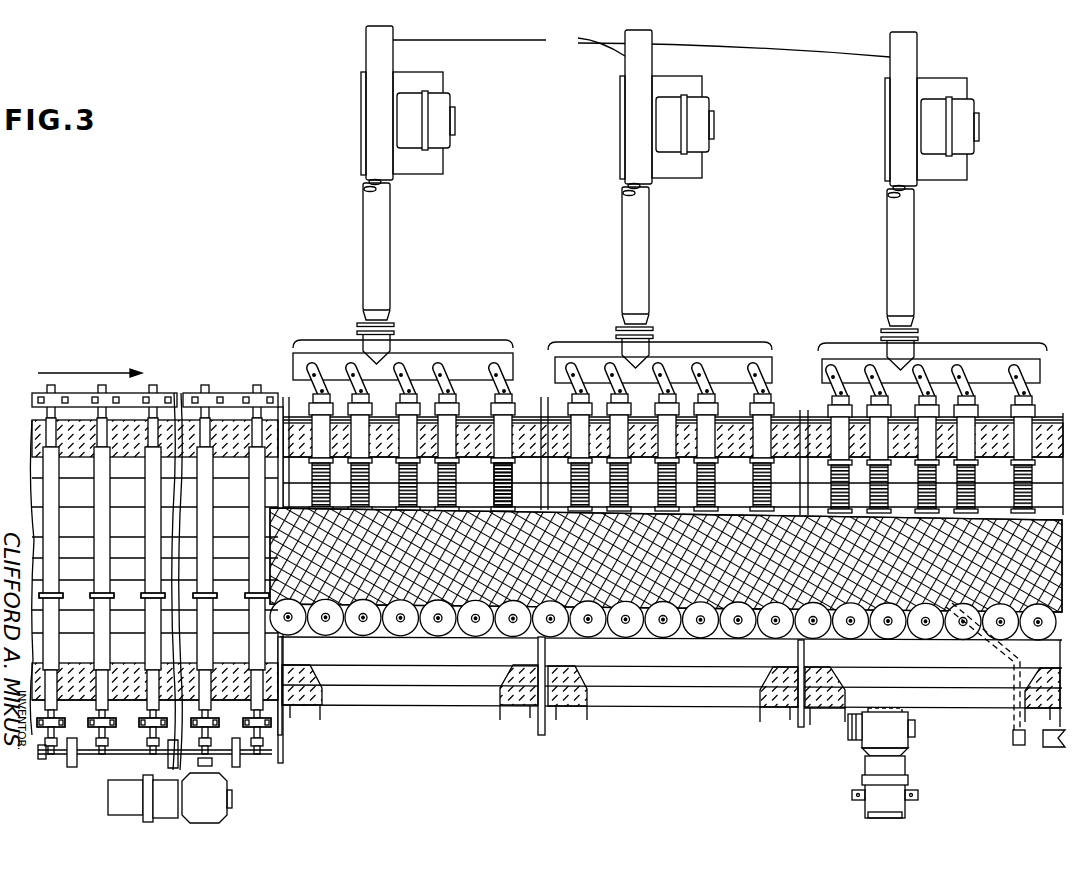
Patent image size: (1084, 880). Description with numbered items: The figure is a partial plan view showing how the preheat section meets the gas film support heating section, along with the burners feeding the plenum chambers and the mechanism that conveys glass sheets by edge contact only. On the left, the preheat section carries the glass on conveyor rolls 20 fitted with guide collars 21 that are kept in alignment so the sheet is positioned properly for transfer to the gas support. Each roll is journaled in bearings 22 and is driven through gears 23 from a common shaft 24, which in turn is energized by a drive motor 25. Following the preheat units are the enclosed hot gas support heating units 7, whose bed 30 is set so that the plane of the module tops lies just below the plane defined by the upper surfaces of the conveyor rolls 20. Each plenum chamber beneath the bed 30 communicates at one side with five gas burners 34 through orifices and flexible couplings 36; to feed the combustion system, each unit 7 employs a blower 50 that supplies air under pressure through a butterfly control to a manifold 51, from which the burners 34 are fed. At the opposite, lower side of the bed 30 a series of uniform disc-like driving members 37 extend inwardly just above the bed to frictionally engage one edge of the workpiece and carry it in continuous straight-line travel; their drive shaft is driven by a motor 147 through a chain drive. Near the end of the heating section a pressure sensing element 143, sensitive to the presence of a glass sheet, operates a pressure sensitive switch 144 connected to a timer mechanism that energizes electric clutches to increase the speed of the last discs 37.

The hot gas support heating unit 7 is at (394, 340).
The conveyor rolls 20 is at (198, 523).
The guide collars 21 is at (234, 596).
The bearings 22 is at (187, 394).
The gears 23 is at (252, 748).
The common shaft 24 is at (273, 757).
The drive motor 25 is at (170, 798).
The bed 30 is at (509, 532).
The gas burners 34 is at (446, 404).
The flexible couplings 36 is at (494, 490).
The disc-like driving members 37 is at (733, 640).
The blower 50 is at (641, 42).
The manifold 51 is at (534, 348).
The pressure sensing element 143 is at (948, 606).
The pressure sensitive switch 144 is at (1013, 738).
The motor 147 is at (862, 772).